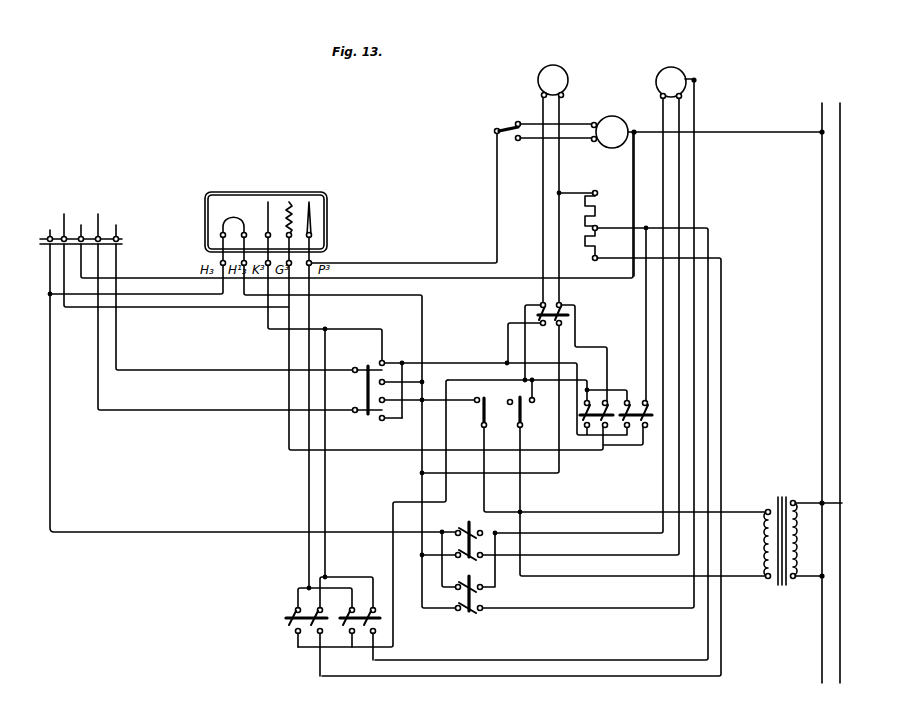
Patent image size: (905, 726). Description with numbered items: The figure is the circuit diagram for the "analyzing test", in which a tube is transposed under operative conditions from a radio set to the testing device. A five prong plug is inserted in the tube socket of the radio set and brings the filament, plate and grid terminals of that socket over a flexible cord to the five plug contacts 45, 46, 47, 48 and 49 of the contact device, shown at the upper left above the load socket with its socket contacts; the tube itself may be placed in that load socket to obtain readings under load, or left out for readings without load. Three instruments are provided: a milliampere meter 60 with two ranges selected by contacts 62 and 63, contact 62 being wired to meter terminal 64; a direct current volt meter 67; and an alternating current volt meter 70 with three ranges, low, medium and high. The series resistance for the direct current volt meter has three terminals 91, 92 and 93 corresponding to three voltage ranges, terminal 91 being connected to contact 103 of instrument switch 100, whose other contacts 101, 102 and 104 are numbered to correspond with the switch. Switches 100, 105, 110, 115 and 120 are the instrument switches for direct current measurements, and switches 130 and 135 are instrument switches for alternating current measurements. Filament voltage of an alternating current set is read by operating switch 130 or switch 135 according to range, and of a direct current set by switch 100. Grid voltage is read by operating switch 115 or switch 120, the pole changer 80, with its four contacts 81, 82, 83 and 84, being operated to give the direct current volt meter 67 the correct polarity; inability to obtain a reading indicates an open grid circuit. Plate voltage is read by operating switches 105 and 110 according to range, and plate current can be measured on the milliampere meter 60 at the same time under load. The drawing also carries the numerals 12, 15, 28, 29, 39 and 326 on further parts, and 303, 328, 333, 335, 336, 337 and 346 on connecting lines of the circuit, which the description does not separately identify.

The transformer secondary winding 12 is at (796, 502).
The transformer primary winding 15 is at (768, 507).
The switch contact 28 is at (486, 428).
The switch contact 29 is at (521, 428).
The contact 39 is at (534, 399).
The plug contact 45 is at (50, 228).
The plug contact 46 is at (64, 215).
The plug contact 47 is at (81, 226).
The plug contact 48 is at (99, 215).
The plug contact 49 is at (116, 227).
The milliampere meter 60 is at (611, 115).
The contact 62 is at (520, 121).
The contact 63 is at (518, 142).
The meter terminal 64 is at (500, 127).
The direct current volt meter 67 is at (562, 66).
The alternating current volt meter 70 is at (681, 68).
The pole changer 80 is at (364, 394).
The contact 81 is at (384, 361).
The contact 82 is at (410, 365).
The contact 83 is at (412, 398).
The contact 84 is at (385, 420).
The terminal 91 is at (597, 192).
The terminal 92 is at (592, 228).
The terminal 93 is at (596, 262).
The instrument switch 100 is at (548, 327).
The switch contact 101 is at (540, 305).
The switch contact 102 is at (540, 322).
The switch contact 103 is at (562, 305).
The switch contact 104 is at (563, 322).
The instrument switch 105 is at (358, 634).
The instrument switch 110 is at (300, 634).
The instrument switch 115 is at (598, 437).
The instrument switch 120 is at (640, 437).
The instrument switch 130 is at (484, 600).
The instrument switch 135 is at (483, 546).
The conductor 303 is at (371, 276).
The contact 326 is at (476, 404).
The conductor 328 is at (350, 296).
The conductor 333 is at (189, 307).
The conductor 335 is at (51, 485).
The conductor 336 is at (97, 387).
The conductor 337 is at (199, 369).
The conductor 346 is at (428, 261).